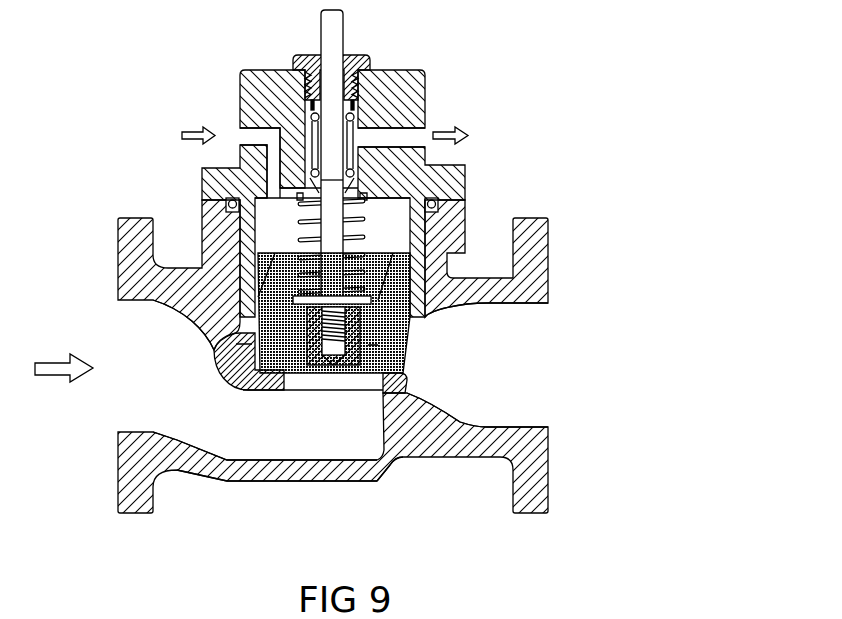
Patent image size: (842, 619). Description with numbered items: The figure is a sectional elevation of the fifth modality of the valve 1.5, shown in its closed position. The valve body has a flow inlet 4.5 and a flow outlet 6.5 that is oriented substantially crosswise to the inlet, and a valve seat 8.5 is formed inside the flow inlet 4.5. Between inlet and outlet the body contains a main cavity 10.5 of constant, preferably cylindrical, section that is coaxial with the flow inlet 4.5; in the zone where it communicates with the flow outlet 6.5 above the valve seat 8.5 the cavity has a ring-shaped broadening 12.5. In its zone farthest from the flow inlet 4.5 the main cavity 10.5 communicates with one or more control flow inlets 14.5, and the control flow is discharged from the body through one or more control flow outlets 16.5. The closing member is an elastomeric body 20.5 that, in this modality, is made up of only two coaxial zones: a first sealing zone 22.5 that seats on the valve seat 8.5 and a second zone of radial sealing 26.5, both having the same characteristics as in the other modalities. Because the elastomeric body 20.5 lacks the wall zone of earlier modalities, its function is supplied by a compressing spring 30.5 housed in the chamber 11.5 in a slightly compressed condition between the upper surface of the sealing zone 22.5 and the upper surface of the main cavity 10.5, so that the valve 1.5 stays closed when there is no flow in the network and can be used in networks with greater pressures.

The valve 1.5 is at (470, 220).
The flow inlet 4.5 is at (290, 430).
The flow outlet 6.5 is at (423, 385).
The valve seat 8.5 is at (333, 378).
The main cavity 10.5 is at (412, 322).
The chamber 11.5 is at (472, 222).
The ring-shaped broadening 12.5 is at (216, 352).
The control flow inlet 14.5 is at (257, 137).
The control flow outlet 16.5 is at (410, 137).
The elastomeric body 20.5 is at (408, 345).
The first sealing zone 22.5 is at (422, 385).
The second zone of radial sealing 26.5 is at (262, 278).
The compressing spring 30.5 is at (292, 233).